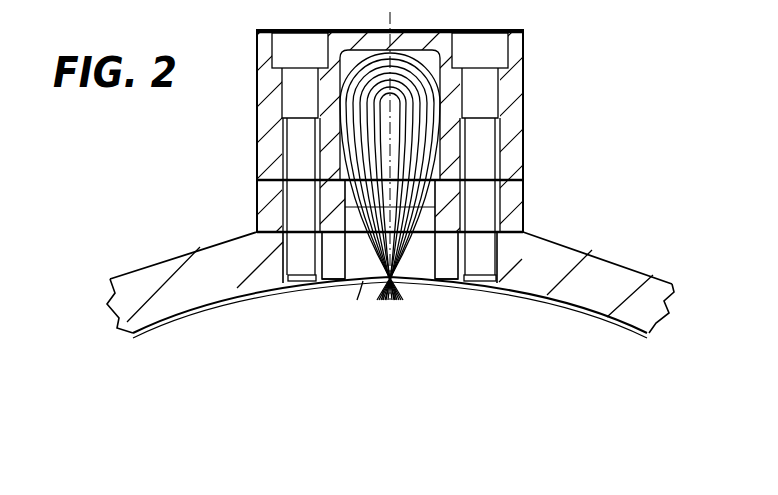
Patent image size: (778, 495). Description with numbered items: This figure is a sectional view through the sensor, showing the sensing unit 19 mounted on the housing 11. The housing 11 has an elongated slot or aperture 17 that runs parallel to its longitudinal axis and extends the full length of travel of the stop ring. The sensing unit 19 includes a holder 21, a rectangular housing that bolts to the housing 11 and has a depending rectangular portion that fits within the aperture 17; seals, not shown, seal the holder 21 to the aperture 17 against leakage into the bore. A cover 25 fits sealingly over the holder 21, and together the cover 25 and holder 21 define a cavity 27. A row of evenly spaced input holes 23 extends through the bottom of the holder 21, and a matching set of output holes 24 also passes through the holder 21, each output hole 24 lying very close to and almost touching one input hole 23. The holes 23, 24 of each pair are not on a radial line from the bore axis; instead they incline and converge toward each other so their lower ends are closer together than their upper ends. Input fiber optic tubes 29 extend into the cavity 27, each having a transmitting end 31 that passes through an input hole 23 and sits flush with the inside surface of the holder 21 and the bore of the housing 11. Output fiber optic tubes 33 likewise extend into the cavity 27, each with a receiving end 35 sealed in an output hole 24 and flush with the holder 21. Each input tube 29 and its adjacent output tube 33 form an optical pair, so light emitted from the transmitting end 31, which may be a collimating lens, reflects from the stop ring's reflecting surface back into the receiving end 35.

The housing 11 is at (620, 264).
The aperture 17 is at (365, 277).
The sensing unit 19 is at (550, 88).
The holder 21 is at (513, 210).
The input holes 23 is at (363, 281).
The output holes 24 is at (433, 278).
The cover 25 is at (522, 45).
The cavity 27 is at (417, 60).
The input fiber optic tubes 29 is at (360, 216).
The transmitting end 31 is at (383, 300).
The output fiber optic tubes 33 is at (432, 208).
The receiving end 35 is at (395, 300).